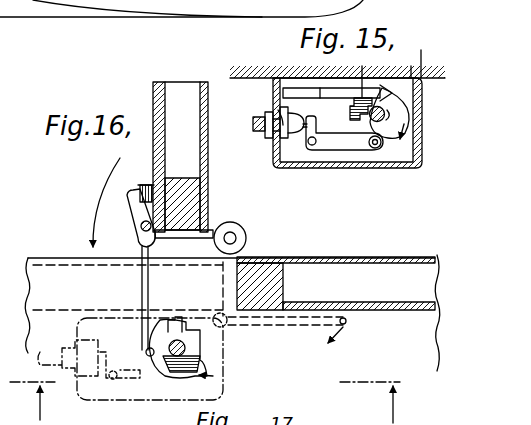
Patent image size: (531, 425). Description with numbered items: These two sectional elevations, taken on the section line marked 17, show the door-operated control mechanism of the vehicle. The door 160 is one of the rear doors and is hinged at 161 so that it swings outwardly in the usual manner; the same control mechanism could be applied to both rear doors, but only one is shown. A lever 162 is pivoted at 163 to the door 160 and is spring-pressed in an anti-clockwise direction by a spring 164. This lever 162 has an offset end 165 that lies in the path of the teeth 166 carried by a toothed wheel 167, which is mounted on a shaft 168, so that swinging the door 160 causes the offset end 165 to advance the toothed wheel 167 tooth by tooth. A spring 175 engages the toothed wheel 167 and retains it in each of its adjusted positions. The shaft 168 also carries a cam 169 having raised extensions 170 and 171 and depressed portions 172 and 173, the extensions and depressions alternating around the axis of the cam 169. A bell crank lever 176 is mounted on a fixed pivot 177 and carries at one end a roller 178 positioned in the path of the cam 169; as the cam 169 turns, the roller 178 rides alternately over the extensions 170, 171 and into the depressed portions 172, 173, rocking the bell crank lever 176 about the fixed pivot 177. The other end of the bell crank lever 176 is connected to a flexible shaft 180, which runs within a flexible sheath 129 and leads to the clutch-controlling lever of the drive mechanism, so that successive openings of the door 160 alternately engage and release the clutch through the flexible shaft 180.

In FIG. 15, the flexible sheath 129 is at (262, 123).
In FIG. 16, the door 160 is at (198, 165).
In FIG. 16, the hinge 161 is at (234, 234).
In FIG. 16, the lever 162 is at (142, 282).
In FIG. 16, the pivot 163 is at (140, 226).
In FIG. 16, the spring 164 is at (142, 187).
In FIG. 16, the offset end 165 is at (143, 350).
In FIG. 16, the teeth 166 is at (160, 354).
In FIG. 15, the toothed wheel 167 is at (351, 72).
In FIG. 16, the toothed wheel 167 is at (206, 354).
In FIG. 15, the shaft 168 is at (386, 102).
In FIG. 16, the shaft 168 is at (172, 318).
In FIG. 15, the cam 169 is at (386, 112).
In FIG. 15, the extension 170 is at (357, 99).
In FIG. 15, the extension 171 is at (406, 117).
In FIG. 15, the depressed portion 172 is at (364, 138).
In FIG. 15, the depressed portion 173 is at (383, 110).
In FIG. 15, the spring 175 is at (331, 90).
In FIG. 15, the bell crank lever 176 is at (332, 143).
In FIG. 15, the fixed pivot 177 is at (308, 142).
In FIG. 15, the roller 178 is at (381, 150).
In FIG. 15, the flexible shaft 180 is at (278, 110).
In FIG. 16, the section line 17- 17 is at (214, 402).